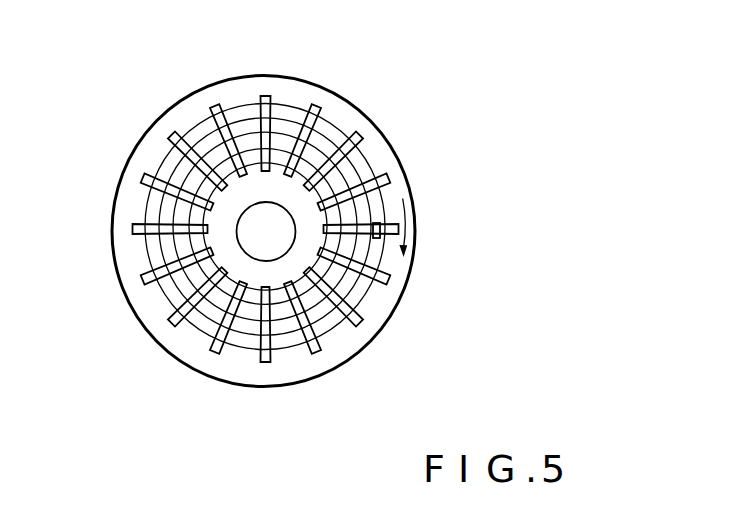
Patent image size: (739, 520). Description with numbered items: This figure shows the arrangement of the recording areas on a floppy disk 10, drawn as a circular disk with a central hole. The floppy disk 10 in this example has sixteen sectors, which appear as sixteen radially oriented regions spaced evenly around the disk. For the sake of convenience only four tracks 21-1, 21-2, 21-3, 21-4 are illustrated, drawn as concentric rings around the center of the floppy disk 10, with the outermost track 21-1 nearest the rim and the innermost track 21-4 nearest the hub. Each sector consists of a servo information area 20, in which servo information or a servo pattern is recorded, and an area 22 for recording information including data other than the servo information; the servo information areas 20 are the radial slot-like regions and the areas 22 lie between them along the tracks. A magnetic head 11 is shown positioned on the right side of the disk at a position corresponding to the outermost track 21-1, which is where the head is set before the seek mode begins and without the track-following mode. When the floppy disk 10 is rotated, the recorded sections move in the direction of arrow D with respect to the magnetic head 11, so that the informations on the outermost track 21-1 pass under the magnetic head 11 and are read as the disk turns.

The floppy disk 10 is at (290, 75).
The magnetic head 11 is at (382, 242).
The servo information area 20 is at (314, 115).
The outermost track 21-1 is at (362, 162).
The track 21-2 is at (386, 197).
The track 21-3 is at (364, 318).
The track 21-4 is at (330, 337).
The information recording area 22 is at (335, 128).
The direction of rotation D is at (408, 230).